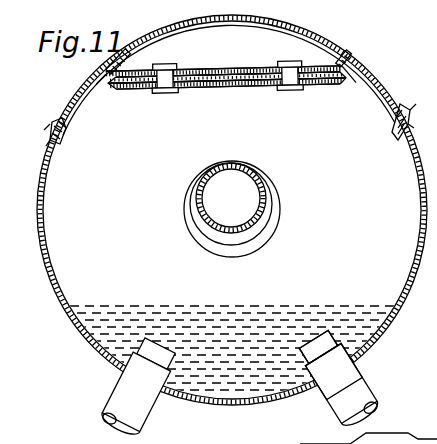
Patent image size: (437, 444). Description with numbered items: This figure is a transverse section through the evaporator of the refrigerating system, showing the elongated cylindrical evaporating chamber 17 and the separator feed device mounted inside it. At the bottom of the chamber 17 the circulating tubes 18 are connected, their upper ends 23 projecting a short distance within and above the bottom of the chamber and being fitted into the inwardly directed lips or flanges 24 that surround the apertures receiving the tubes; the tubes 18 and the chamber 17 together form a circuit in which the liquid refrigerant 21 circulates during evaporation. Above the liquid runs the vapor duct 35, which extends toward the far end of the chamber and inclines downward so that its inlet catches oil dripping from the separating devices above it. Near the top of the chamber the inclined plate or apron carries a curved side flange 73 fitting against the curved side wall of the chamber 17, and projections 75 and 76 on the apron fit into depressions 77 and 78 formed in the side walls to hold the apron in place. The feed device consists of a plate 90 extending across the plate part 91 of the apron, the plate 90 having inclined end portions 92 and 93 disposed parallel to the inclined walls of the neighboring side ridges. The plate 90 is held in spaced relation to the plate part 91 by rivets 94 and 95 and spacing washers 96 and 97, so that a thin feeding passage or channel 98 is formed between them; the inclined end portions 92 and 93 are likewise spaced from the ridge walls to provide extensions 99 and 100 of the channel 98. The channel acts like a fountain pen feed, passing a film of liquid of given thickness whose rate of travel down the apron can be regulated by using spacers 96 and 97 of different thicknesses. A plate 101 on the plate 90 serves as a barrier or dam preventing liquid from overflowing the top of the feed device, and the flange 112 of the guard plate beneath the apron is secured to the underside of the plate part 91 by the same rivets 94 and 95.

The evaporating chamber 17 is at (369, 69).
The circulating tubes 18 is at (324, 409).
The liquid refrigerant 21 is at (248, 318).
The upper ends of the tubes 23 is at (318, 340).
The inwardly directed lips or flanges 24 is at (352, 352).
The vapor duct 35 is at (198, 207).
The curved side flange 73 is at (70, 126).
The projection 75 is at (64, 138).
The projection 76 is at (398, 120).
The depression 77 is at (53, 130).
The depression 78 is at (406, 112).
The plate 90 is at (228, 71).
The plate part 91 is at (208, 100).
The inclined end portion 92 is at (137, 42).
The inclined end portion 93 is at (340, 58).
The rivet 94 is at (163, 70).
The rivet 95 is at (289, 67).
The spacing washer 96 is at (145, 91).
The spacing washer 97 is at (284, 91).
The feeding passage or channel 98 is at (242, 89).
The extension of the feeding channel 99 is at (108, 84).
The extension of the feeding channel 100 is at (350, 76).
The barrier plate 101 is at (247, 46).
The flange of the guard plate 112 is at (203, 137).